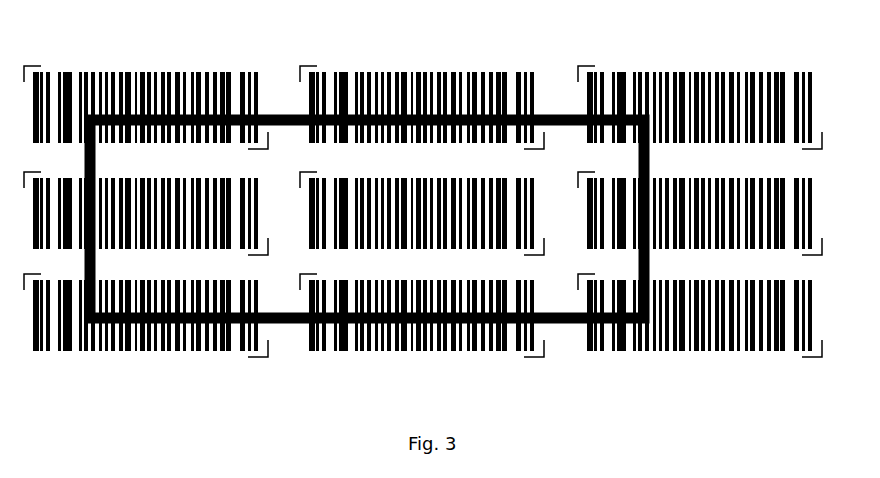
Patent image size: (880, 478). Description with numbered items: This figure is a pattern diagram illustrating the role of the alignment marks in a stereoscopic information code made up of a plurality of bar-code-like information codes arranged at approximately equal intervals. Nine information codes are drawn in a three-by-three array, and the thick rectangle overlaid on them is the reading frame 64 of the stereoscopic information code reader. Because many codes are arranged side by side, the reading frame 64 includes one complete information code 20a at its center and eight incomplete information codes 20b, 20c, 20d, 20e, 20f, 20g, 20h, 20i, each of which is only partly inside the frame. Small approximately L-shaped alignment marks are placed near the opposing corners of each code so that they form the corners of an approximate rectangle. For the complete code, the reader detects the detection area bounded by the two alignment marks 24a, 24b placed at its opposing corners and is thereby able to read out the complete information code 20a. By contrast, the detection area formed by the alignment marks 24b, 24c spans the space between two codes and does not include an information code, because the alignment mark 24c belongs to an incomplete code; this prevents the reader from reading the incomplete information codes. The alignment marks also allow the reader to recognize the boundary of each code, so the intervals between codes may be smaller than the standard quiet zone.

The information code 20a is at (422, 213).
The information code 20b is at (685, 201).
The information code 20c is at (665, 343).
The information code 20d is at (380, 343).
The information code 20e is at (85, 343).
The information code 20f is at (120, 170).
The information code 20g is at (120, 64).
The information code 20h is at (402, 65).
The information code 20i is at (668, 64).
The alignment mark 24a is at (300, 165).
The alignment mark 24b is at (528, 247).
The alignment mark 24c is at (570, 169).
The reading frame 64 is at (260, 108).